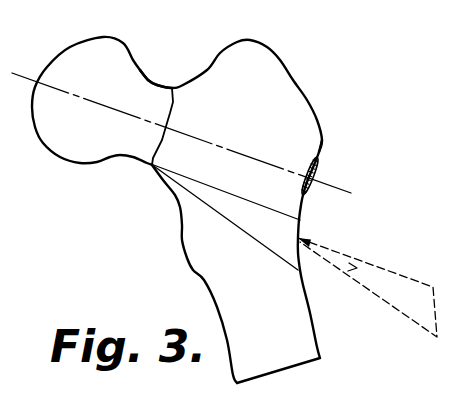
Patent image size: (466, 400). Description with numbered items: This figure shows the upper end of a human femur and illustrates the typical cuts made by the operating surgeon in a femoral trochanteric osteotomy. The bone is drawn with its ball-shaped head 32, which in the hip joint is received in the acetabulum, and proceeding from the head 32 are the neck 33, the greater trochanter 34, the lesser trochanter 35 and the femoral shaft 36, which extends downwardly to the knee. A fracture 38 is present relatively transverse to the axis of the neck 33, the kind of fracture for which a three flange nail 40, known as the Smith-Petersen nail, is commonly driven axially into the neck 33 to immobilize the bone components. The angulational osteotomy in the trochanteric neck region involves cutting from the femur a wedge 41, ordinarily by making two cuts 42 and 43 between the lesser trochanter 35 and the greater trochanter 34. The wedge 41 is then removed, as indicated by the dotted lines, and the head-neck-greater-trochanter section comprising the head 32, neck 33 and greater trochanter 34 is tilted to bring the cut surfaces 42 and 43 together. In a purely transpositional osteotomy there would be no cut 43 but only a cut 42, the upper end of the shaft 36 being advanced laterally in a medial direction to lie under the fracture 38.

The head 32 is at (76, 53).
The neck 33 is at (148, 90).
The greater trochanter 34 is at (275, 78).
The lesser trochanter 35 is at (181, 249).
The femoral shaft 36 is at (299, 323).
The fracture 38 is at (174, 100).
The three flange nail 40 is at (318, 163).
The wedge 41 is at (288, 226).
The cut 42 is at (221, 190).
The cut 43 is at (250, 236).